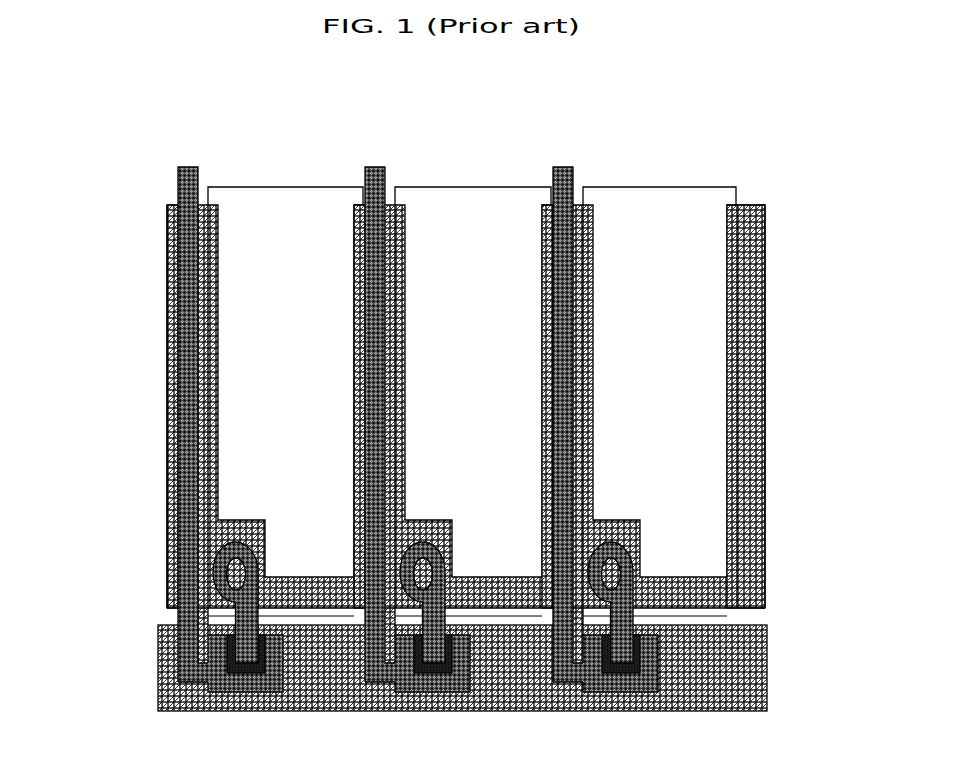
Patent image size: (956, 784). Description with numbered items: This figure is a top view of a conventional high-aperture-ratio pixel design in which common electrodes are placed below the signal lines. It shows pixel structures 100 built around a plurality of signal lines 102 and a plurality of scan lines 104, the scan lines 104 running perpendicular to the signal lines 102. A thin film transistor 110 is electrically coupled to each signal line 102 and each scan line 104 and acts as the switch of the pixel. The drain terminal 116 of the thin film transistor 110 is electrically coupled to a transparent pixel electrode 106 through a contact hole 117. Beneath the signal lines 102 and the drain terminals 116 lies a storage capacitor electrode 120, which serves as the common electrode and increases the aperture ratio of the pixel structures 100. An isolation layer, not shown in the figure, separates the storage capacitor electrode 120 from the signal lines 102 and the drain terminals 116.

The pixel structure 100 is at (357, 115).
The signal line 102 is at (188, 167).
The scan line 104 is at (158, 683).
The transparent pixel electrode 106 is at (255, 200).
The thin film transistor 110 is at (475, 672).
The drain terminal 116 is at (435, 598).
The contact hole 117 is at (422, 573).
The storage capacitor electrode 120 is at (752, 590).